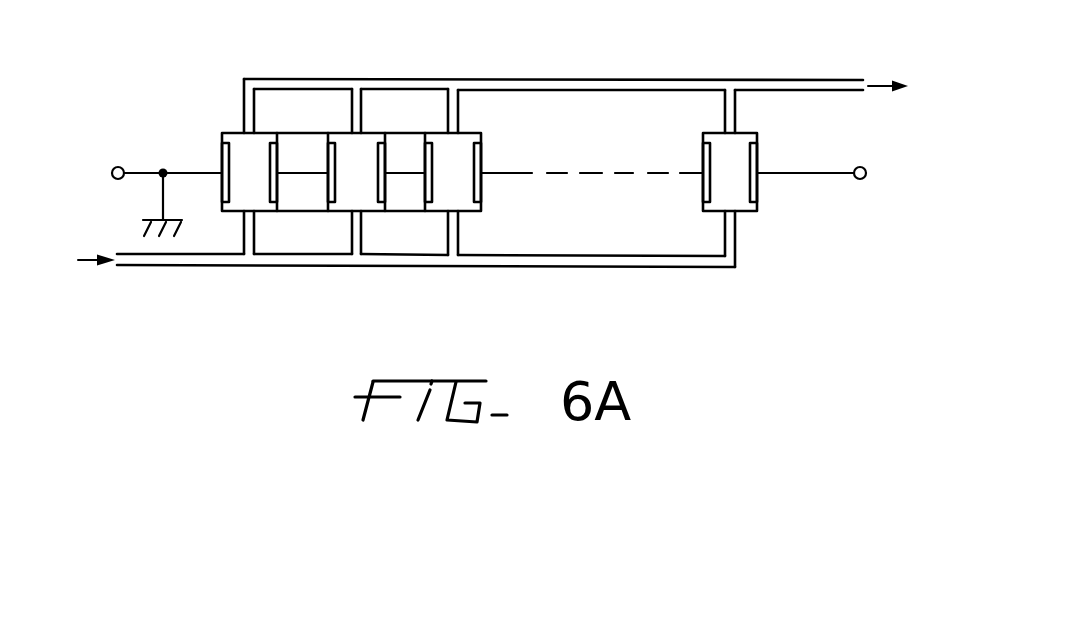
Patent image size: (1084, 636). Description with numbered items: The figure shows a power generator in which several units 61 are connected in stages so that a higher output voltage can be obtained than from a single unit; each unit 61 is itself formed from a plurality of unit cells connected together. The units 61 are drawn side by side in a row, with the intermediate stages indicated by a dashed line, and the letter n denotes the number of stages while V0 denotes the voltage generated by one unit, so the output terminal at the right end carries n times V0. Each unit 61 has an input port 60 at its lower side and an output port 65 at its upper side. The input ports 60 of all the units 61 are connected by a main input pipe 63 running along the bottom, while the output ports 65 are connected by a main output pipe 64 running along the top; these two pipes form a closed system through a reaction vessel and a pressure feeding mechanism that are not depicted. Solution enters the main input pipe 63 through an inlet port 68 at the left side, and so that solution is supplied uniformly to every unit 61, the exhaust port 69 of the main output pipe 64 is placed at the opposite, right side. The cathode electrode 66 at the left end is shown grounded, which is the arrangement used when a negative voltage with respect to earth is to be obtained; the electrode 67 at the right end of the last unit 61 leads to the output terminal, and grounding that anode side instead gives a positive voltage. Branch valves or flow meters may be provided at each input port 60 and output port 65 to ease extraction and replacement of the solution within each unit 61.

The input port 60 is at (252, 228).
The unit 61 is at (241, 193).
The main input pipe 63 is at (548, 260).
The main output pipe 64 is at (615, 80).
The output port 65 is at (247, 103).
The cathode electrode 66 is at (222, 157).
The output connection 67 is at (758, 188).
The inlet port 68 is at (152, 263).
The exhaust port 69 is at (837, 81).